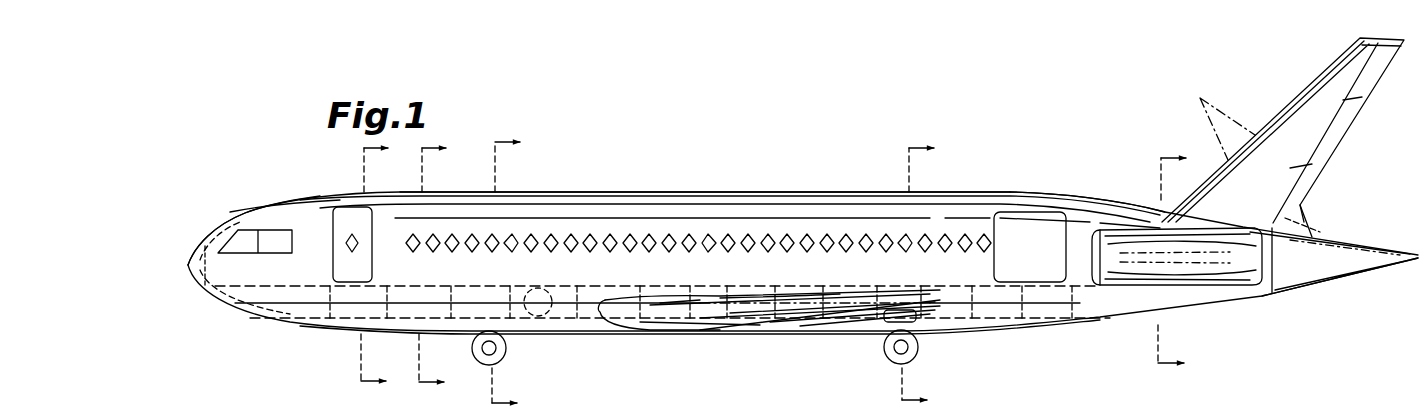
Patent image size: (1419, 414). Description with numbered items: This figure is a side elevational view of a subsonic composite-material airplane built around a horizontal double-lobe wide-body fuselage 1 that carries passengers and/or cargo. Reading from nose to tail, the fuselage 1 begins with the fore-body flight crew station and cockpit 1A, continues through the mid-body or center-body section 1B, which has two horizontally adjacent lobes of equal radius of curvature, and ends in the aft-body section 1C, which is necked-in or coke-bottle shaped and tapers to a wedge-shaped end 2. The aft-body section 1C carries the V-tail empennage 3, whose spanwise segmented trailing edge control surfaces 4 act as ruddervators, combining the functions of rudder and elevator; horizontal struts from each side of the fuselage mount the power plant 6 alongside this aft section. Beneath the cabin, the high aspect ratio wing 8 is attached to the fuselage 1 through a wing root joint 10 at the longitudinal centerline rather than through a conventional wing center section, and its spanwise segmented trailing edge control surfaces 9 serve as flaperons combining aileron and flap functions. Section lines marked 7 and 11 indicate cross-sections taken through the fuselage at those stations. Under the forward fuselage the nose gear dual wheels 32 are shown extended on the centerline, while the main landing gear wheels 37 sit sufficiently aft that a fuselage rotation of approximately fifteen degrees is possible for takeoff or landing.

The wide-body fuselage 1 is at (803, 226).
The fore-body flight crew station and cockpit 1A is at (278, 197).
The mid-body or center-body section 1B is at (736, 186).
The aft-body section 1C is at (1138, 196).
The wedge-shaped end 2 is at (1300, 205).
The V-tail empennage 3 is at (1292, 105).
The spanwise segmented trailing edge control surfaces 4 is at (1360, 97).
The power plant 6 is at (1198, 262).
The section line 7 is at (384, 268).
The high aspect ratio wing 8 is at (516, 275).
The spanwise segmented trailing edge control surfaces 9 is at (1183, 263).
The wing root joint 10 is at (448, 270).
The section line 11 is at (935, 277).
The dual wheels 32 is at (507, 348).
The main landing gear wheels 37 is at (918, 350).